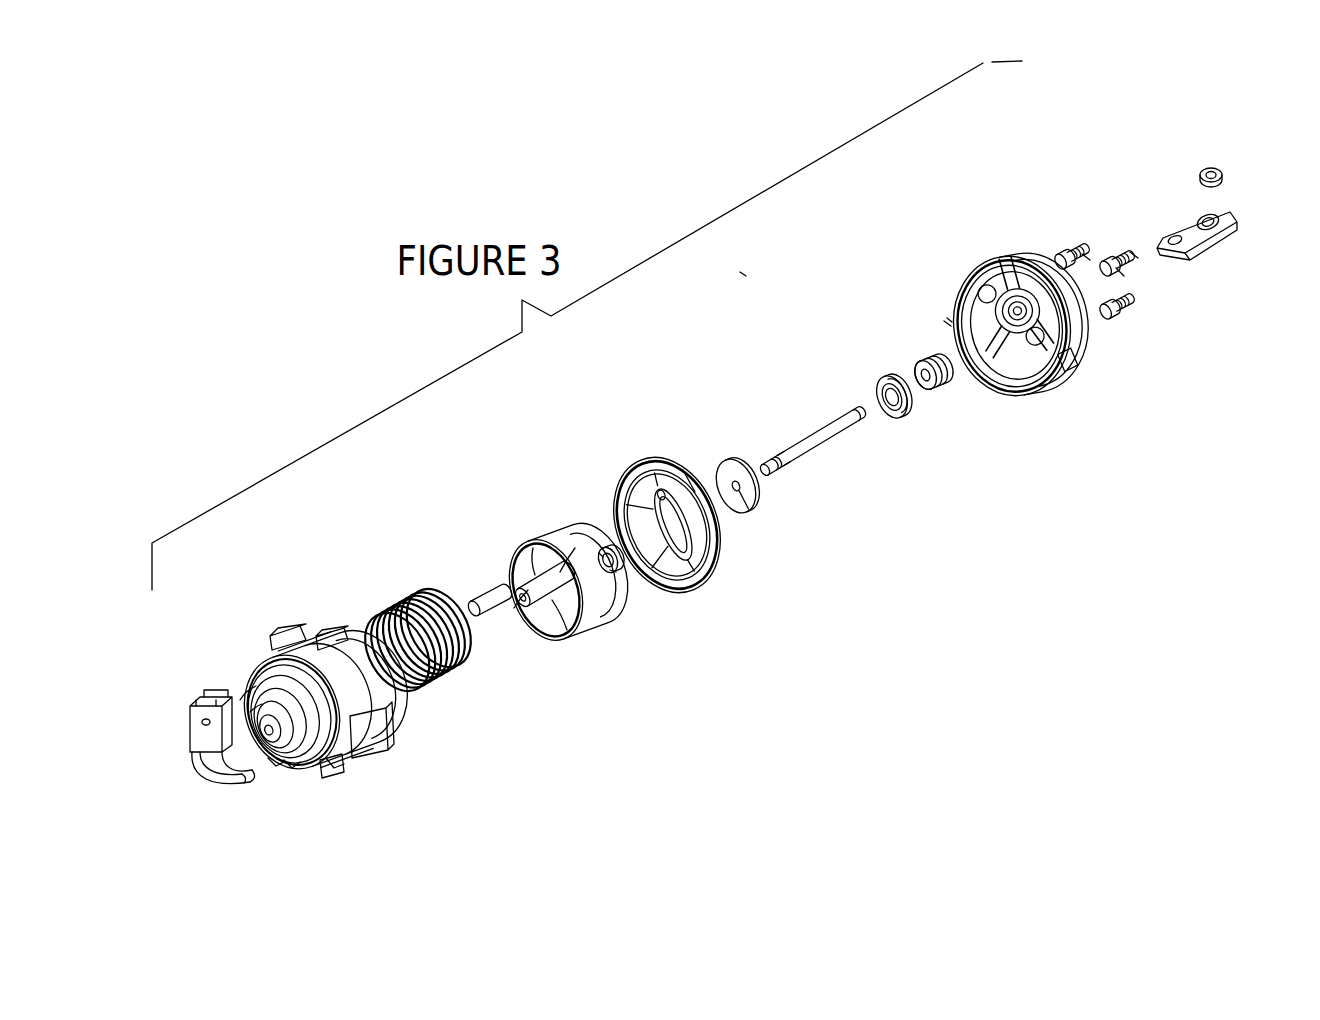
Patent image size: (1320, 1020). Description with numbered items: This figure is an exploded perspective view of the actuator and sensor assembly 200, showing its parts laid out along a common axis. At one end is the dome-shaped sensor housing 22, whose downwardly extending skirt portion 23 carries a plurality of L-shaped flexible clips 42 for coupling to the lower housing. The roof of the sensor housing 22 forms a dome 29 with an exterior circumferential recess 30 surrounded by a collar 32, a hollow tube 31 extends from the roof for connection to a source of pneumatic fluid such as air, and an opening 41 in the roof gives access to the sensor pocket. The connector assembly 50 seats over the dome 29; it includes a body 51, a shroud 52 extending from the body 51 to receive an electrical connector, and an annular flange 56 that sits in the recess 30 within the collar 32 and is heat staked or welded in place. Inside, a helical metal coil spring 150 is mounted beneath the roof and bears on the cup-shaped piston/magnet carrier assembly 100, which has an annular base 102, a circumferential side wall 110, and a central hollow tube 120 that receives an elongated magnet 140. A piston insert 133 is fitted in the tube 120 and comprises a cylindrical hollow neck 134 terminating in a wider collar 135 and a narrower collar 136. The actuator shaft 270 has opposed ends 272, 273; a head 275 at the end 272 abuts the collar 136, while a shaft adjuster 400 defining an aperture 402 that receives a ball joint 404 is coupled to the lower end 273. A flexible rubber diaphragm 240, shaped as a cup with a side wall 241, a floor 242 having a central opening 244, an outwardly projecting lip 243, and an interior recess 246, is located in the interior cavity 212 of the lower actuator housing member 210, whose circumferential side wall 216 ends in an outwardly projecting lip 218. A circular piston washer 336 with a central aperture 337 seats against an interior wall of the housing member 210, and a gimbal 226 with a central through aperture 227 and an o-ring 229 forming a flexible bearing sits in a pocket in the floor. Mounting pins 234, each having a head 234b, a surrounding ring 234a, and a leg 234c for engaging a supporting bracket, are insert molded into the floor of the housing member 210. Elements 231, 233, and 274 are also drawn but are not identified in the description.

The sensor housing 22 is at (264, 606).
The skirt portion 23 is at (400, 712).
The dome 29 is at (254, 710).
The exterior circumferential recess 30 is at (244, 704).
The hollow tube 31 is at (273, 762).
The collar 32 is at (330, 762).
The opening 41 is at (280, 762).
The clips 42 is at (283, 622).
The connector assembly 50 is at (192, 758).
The body 51 is at (220, 768).
The shroud 52 is at (190, 724).
The annular distal circumferential flange 56 is at (243, 790).
The piston/magnet carrier assembly 100 is at (560, 576).
The annular base 102 is at (571, 625).
The circumferential side wall 110 is at (598, 602).
The hollow tube 120 is at (548, 612).
The piston insert 133 is at (598, 548).
The cylindrical hollow neck 134 is at (598, 555).
The annular collar 135 is at (611, 547).
The annular collar 136 is at (614, 573).
The magnet 140 is at (486, 586).
The spring 150 is at (405, 556).
The actuator and sensor assembly 200 is at (742, 268).
The actuator housing member 210 is at (970, 232).
The interior cavity 212 is at (1007, 364).
The circumferential side wall 216 is at (1064, 364).
The lip 218 is at (994, 264).
The gimbal 226 is at (916, 362).
The central through aperture 227 is at (930, 390).
The o-ring 229 is at (916, 356).
The seal ring 231 is at (877, 377).
The seal lip 233 is at (908, 407).
The mounting pins 234 is at (1103, 250).
The ring 234a is at (1086, 257).
The head 234b is at (1121, 272).
The leg 234c is at (1135, 255).
The diaphragm 240 is at (667, 454).
The side wall 241 is at (692, 492).
The floor 242 is at (697, 553).
The lip 243 is at (708, 575).
The central opening 244 is at (687, 578).
The interior recess 246 is at (660, 547).
The actuator shaft 270 is at (815, 432).
The end 272 is at (792, 463).
The end 273 is at (858, 417).
The shaft groove 274 is at (772, 460).
The head 275 is at (768, 482).
The piston washer 336 is at (731, 460).
The central aperture 337 is at (745, 505).
The shaft adjuster 400 is at (1215, 215).
The aperture 402 is at (1226, 230).
The ball joint 404 is at (1220, 168).